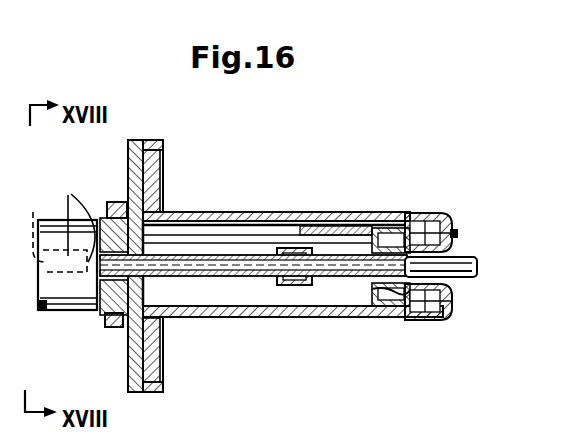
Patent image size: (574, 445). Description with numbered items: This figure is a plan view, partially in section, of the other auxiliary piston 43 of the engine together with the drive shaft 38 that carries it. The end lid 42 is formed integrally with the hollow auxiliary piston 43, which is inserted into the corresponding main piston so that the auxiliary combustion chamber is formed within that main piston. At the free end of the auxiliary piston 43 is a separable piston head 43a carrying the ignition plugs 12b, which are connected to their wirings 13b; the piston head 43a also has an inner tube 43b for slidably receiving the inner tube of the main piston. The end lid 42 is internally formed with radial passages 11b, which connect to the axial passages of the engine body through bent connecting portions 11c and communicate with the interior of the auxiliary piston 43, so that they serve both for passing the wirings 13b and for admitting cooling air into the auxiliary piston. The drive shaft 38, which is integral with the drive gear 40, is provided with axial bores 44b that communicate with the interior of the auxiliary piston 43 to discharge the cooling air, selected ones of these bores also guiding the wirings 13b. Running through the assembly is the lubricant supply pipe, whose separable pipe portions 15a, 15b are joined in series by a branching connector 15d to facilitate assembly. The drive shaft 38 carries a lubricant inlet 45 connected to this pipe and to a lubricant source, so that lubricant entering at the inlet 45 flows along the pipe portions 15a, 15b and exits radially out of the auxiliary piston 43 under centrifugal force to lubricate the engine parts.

The radial passages 11b is at (157, 172).
The bent connecting portions 11c is at (164, 144).
The ignition plugs 12b is at (425, 214).
The wirings 13b is at (385, 217).
The pipe portion 15a is at (228, 255).
The pipe portion 15b is at (463, 256).
The branching connector 15d is at (302, 214).
The drive shaft 38 is at (48, 308).
The drive gear 40 is at (109, 202).
The end lid 42 is at (133, 140).
The auxiliary piston 43 is at (348, 217).
The piston head 43a is at (446, 217).
The inner tube 43b is at (373, 288).
The axial bores 44b is at (70, 215).
The lubricant inlet 45 is at (50, 230).